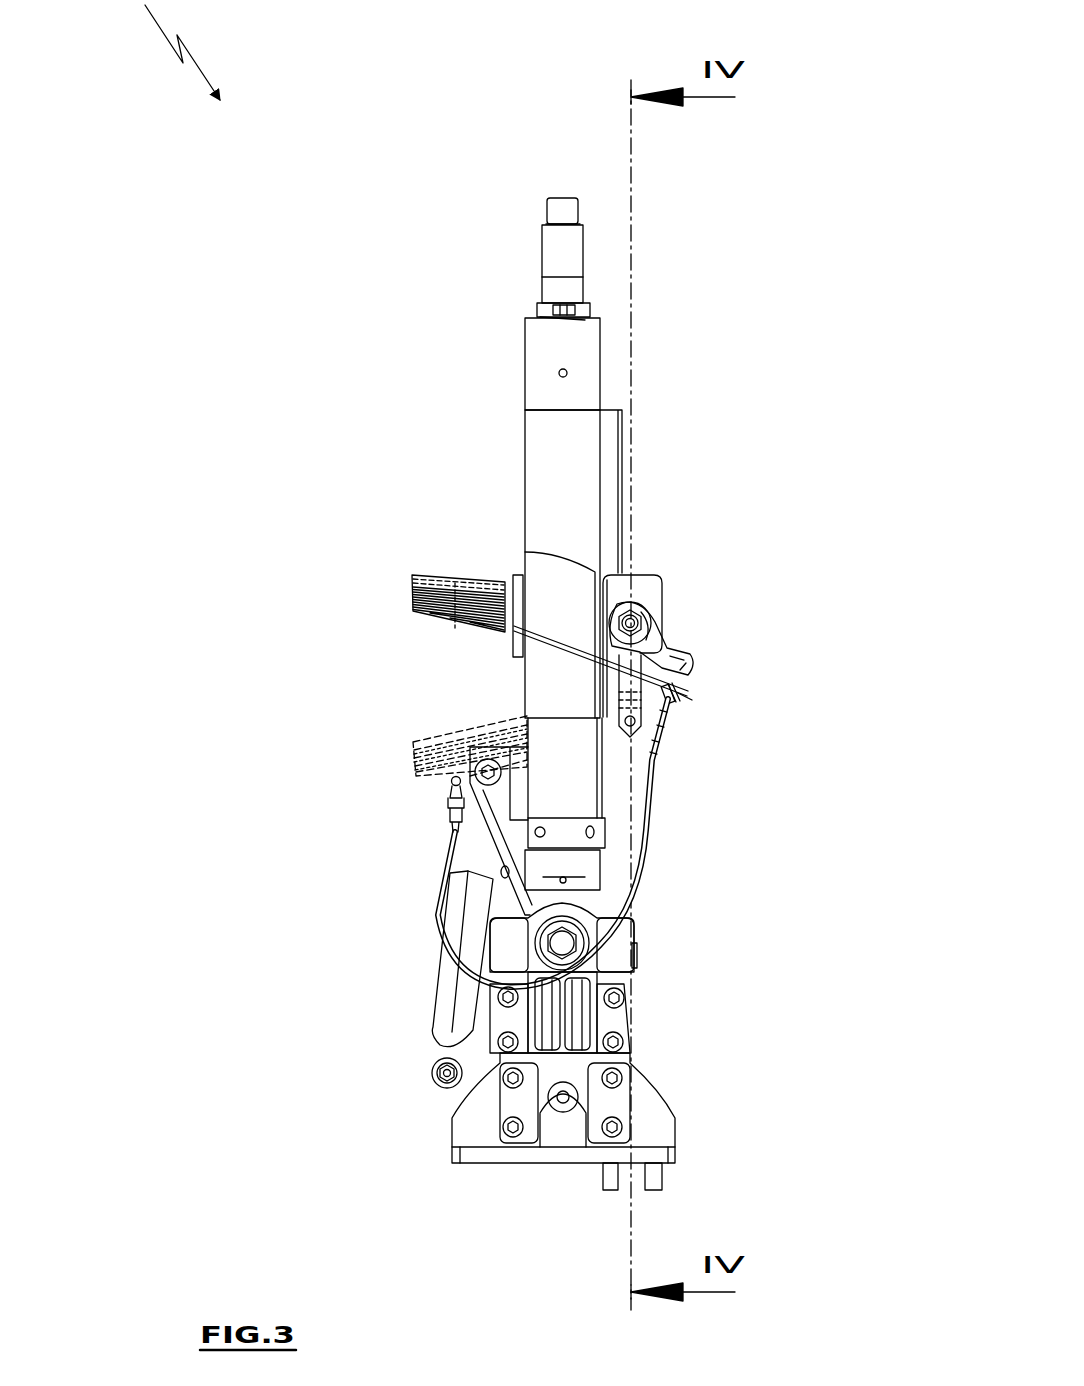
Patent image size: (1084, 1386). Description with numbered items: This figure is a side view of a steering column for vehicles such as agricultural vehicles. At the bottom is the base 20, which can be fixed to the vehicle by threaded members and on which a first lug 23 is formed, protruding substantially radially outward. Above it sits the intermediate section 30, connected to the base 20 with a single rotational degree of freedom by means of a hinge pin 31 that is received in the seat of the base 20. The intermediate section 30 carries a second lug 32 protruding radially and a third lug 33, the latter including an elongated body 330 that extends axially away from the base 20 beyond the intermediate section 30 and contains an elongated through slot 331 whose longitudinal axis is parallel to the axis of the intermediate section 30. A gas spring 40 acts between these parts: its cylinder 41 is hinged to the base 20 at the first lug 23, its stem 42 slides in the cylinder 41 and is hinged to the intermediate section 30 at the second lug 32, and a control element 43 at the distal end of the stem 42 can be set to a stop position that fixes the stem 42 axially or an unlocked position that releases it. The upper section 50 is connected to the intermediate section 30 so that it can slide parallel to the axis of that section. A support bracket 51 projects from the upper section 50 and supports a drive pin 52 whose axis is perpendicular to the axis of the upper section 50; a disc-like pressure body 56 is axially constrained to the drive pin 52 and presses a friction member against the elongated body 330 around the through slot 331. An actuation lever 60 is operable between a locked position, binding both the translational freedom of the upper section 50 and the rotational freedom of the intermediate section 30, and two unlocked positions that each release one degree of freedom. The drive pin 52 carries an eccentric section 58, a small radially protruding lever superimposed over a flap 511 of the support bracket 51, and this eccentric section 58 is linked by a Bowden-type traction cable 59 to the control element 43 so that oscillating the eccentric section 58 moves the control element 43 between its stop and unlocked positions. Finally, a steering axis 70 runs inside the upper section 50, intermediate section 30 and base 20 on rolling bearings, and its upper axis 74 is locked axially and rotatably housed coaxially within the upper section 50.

The base 20 is at (642, 1033).
The first lug 23 is at (473, 1072).
The intermediate section 30 is at (598, 893).
The hinge pin 31 is at (583, 962).
The second lug 32 is at (490, 833).
The third lug 33 is at (648, 813).
The elongated body 330 is at (650, 756).
The elongated through slot 331 is at (664, 704).
The gas spring 40 is at (447, 983).
The cylinder 41 is at (460, 1013).
The stem 42 is at (475, 862).
The control element 43 is at (452, 784).
The upper section 50 is at (540, 380).
The support bracket 51 is at (522, 580).
The flap 511 is at (552, 665).
The drive pin 52 is at (652, 606).
The pressure body 56 is at (645, 580).
The eccentric section 58 is at (674, 651).
The traction cable 59 is at (442, 918).
The actuation lever 60 is at (413, 590).
The steering axis 70 is at (549, 185).
The upper axis 74 is at (553, 256).